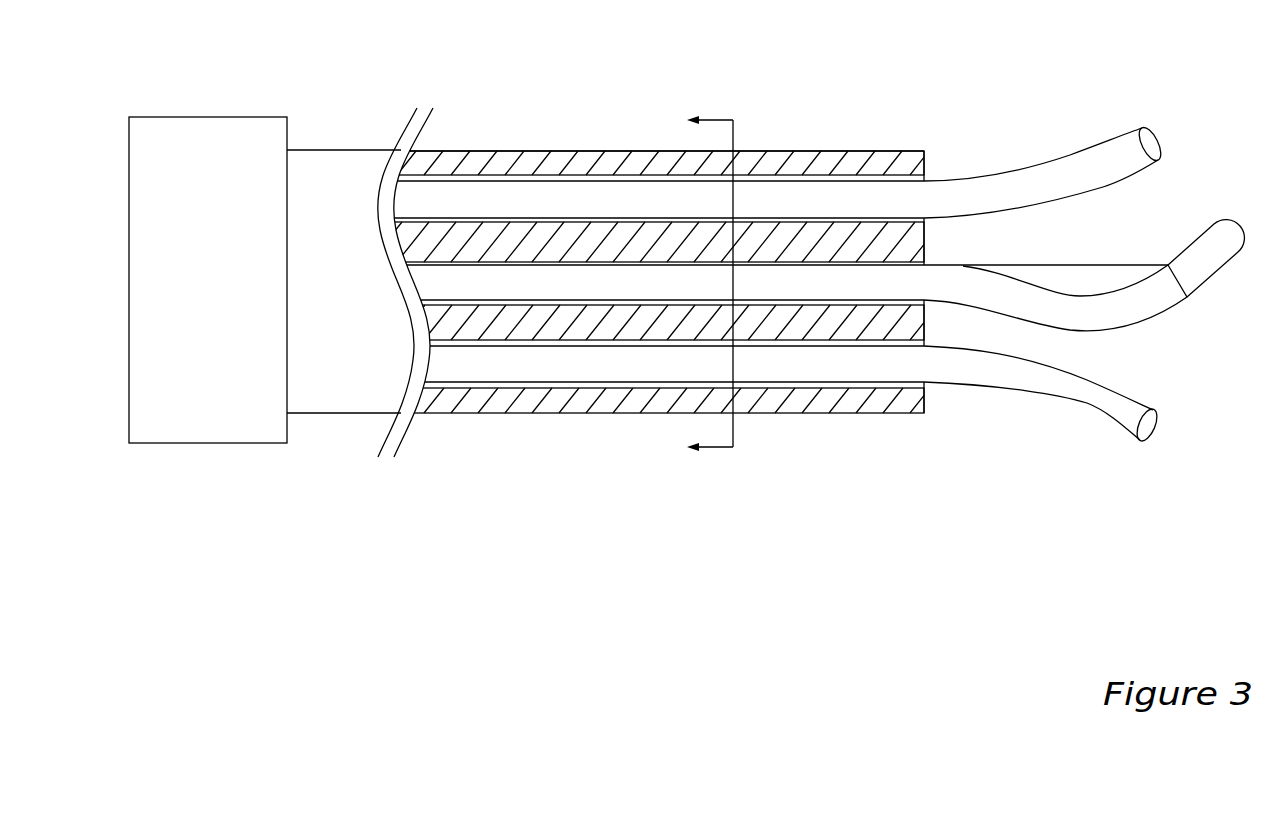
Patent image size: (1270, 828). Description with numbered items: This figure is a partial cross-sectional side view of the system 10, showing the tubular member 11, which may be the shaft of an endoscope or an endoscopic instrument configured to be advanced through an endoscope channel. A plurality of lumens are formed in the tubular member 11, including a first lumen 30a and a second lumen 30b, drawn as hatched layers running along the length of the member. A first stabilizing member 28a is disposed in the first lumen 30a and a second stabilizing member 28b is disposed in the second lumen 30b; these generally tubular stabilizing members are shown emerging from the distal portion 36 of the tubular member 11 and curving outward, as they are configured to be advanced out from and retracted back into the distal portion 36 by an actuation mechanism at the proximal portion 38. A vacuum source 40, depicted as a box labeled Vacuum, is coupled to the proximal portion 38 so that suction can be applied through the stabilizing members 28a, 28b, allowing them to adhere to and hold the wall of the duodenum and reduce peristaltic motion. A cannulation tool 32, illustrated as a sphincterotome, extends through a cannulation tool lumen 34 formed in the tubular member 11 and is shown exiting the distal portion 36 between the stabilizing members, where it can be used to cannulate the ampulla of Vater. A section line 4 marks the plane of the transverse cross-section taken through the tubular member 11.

The vacuum source 40 is at (212, 128).
The proximal portion 38 is at (343, 148).
The system 10 is at (463, 118).
The tubular member 11 is at (531, 140).
The first lumen 30a is at (623, 180).
The second lumen 30b is at (572, 383).
The distal portion 36 is at (777, 150).
The cannulation tool lumen 34 is at (885, 262).
The cannulation tool 32 is at (850, 283).
The first stabilizing member 28a is at (1062, 175).
The second stabilizing member 28b is at (1062, 395).
The section line 4- 4 is at (699, 284).